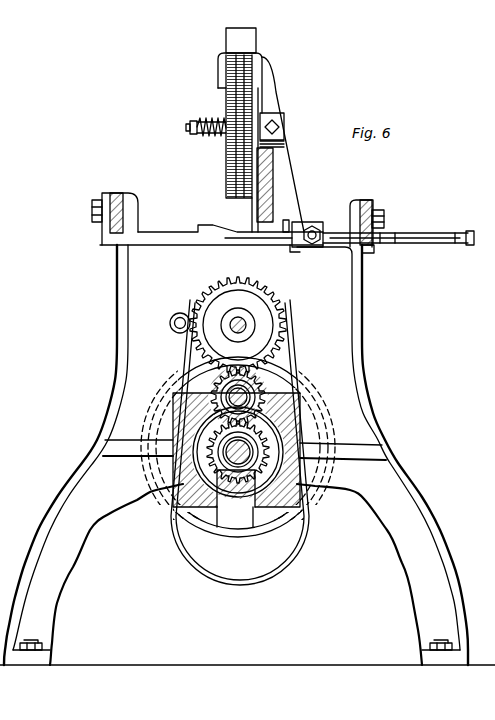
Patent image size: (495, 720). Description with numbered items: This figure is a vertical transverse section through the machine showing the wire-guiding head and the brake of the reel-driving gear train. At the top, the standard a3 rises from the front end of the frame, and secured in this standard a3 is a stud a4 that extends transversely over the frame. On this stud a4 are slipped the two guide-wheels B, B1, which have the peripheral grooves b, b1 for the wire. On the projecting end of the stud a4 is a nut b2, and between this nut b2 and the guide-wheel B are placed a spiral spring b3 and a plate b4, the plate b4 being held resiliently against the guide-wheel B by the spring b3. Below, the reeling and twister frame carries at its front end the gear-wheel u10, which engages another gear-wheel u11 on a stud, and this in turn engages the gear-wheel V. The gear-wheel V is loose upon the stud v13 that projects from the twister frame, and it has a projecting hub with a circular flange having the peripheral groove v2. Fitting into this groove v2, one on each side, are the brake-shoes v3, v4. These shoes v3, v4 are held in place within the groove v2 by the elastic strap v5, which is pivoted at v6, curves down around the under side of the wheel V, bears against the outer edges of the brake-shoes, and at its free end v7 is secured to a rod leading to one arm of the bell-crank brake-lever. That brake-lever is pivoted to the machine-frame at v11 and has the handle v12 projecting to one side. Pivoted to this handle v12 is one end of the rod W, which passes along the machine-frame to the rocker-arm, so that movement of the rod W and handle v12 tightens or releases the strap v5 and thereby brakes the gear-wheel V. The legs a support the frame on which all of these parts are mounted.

The leg a is at (247, 455).
The standard a3 is at (271, 167).
The stud a4 is at (190, 128).
The peripheral groove b is at (233, 65).
The peripheral groove b1 is at (255, 64).
The guide-wheel B is at (262, 88).
The guide-wheel B1 is at (245, 87).
The nut b2 is at (200, 140).
The spiral spring b3 is at (222, 143).
The plate b4 is at (226, 160).
The pivot of the bell-crank brake-lever v11 is at (207, 219).
The rod W is at (313, 227).
The stud v13 is at (378, 210).
The handle v12 is at (398, 228).
The free end of the elastic strap v7 is at (290, 246).
The pivot of the elastic strap v6 is at (172, 322).
The gear-wheel u10 is at (238, 325).
The gear-wheel u11 is at (220, 386).
The gear-wheel V is at (180, 444).
The brake-shoe v3 is at (236, 437).
The brake-shoe v4 is at (251, 488).
The peripheral groove v2 is at (234, 509).
The elastic strap v5 is at (250, 586).